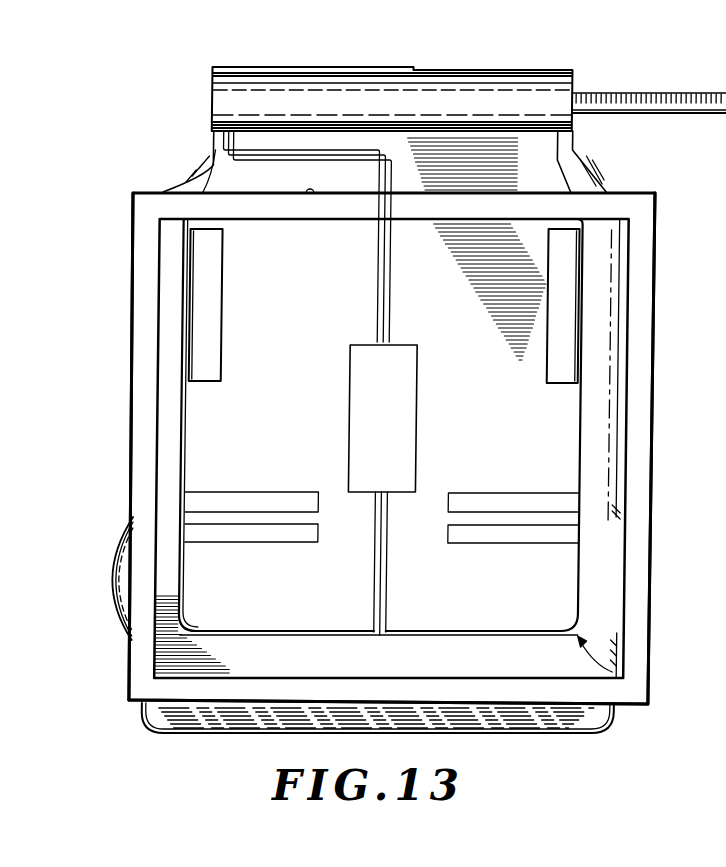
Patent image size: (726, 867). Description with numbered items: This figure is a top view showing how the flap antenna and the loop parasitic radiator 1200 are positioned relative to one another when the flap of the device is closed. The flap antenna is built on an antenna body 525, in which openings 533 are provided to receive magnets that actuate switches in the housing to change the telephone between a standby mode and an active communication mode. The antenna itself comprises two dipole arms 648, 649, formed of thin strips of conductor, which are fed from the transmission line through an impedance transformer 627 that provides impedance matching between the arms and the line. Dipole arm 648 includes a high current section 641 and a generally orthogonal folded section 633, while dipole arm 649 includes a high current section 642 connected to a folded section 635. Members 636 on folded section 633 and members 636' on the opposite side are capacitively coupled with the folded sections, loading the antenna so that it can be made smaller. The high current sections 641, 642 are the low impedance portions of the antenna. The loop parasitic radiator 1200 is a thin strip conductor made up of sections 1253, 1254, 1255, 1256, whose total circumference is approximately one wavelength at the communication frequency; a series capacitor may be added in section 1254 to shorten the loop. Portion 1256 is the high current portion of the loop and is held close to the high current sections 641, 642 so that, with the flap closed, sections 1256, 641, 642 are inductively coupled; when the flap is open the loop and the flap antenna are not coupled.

The loop parasitic radiator 1200 is at (651, 192).
The section of the parasitic radiator 1253 is at (134, 208).
The section of the parasitic radiator 1255 is at (654, 485).
The dipole arm 648 is at (657, 692).
The section of the parasitic radiator 1254 is at (421, 219).
The high current portion of the parasitic radiator 1256 is at (399, 638).
The folded section 635 is at (189, 566).
The high current section 642 is at (233, 628).
The antenna body 525 is at (563, 421).
The high current section 641 is at (443, 631).
The dipole arm 649 is at (265, 644).
The folded section 633 is at (598, 595).
The openings 533 is at (210, 380).
The impedance transformer 627 is at (351, 345).
The members 636' is at (271, 530).
The members 636 is at (494, 531).